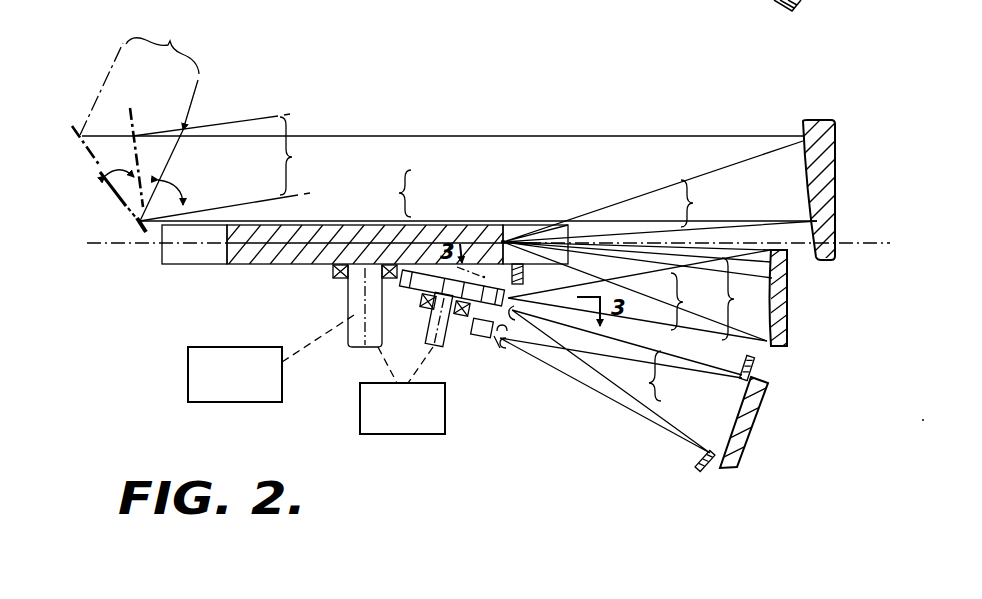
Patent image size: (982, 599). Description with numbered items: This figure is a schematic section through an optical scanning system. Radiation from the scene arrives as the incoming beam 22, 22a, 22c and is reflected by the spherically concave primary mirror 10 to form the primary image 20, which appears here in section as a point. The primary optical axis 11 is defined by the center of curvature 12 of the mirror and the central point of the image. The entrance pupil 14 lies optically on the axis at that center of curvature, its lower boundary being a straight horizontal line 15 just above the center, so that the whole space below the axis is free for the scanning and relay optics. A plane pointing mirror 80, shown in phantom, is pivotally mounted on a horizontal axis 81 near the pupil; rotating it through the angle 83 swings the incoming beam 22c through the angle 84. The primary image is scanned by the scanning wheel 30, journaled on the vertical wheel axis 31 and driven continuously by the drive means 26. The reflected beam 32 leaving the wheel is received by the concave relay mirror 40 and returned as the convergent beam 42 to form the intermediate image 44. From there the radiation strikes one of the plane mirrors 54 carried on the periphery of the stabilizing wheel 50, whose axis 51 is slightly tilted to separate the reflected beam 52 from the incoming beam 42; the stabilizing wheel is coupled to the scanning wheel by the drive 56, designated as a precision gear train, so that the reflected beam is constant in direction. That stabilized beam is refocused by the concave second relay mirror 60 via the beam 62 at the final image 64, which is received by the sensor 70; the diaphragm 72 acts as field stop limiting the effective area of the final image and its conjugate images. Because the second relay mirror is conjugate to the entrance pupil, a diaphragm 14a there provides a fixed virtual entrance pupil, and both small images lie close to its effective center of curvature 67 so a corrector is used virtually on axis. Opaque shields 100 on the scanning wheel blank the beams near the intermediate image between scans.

The primary mirror 10 is at (803, 150).
The primary optical axis 11 is at (103, 243).
The center of curvature 12 is at (182, 229).
The entrance pupil 14 is at (189, 124).
The diaphragm 14a is at (700, 472).
The lower boundary of the pupil 15 is at (208, 213).
The primary image 20 is at (504, 241).
The incoming beam 22 is at (700, 203).
The incoming beam 22a is at (384, 193).
The incoming beam 22c is at (228, 106).
The drive means 26 is at (233, 403).
The scanning wheel 30 is at (280, 268).
The wheel axis 31 is at (363, 358).
The reflected beam 32 is at (740, 299).
The relay mirror 40 is at (787, 289).
The convergent beam 42 is at (690, 301).
The intermediate image 44 is at (534, 278).
The stabilizing wheel 50 is at (427, 261).
The stabilizing wheel axis 51 is at (440, 356).
The reflected beam 52 is at (667, 377).
The plane mirrors 54 is at (405, 292).
The drive 56 is at (397, 436).
The second relay mirror 60 is at (772, 383).
The beam 62 is at (627, 352).
The final image 64 is at (500, 346).
The effective center of curvature 67 is at (500, 333).
The sensor 70 is at (487, 343).
The diaphragm 72 is at (498, 346).
The pointing mirror 80 is at (84, 148).
The pivot axis 81 is at (137, 232).
The rotation angle 83 is at (100, 191).
The beam swing angle 84 is at (173, 184).
The opaque shields 100 is at (510, 268).